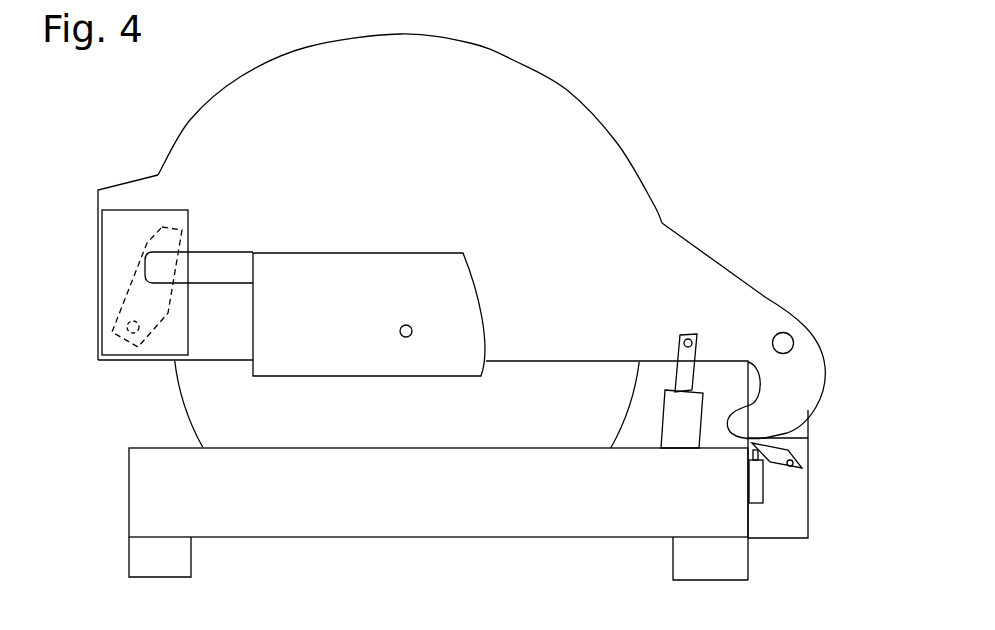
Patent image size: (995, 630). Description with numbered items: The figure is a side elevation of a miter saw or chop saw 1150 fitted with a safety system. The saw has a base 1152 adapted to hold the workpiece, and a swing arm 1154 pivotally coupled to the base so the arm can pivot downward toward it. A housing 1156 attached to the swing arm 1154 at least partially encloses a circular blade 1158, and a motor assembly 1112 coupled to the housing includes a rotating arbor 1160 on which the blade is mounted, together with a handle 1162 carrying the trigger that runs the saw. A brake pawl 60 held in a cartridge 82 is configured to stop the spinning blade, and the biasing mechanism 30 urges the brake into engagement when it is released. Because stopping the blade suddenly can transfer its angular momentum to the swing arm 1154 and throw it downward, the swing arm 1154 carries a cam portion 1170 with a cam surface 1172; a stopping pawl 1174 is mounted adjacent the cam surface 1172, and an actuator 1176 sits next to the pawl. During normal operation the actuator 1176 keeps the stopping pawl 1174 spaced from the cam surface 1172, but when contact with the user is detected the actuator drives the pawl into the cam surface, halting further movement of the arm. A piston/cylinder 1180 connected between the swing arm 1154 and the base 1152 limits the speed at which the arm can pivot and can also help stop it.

The biasing mechanism 30 is at (131, 168).
The brake pawl 60 is at (143, 287).
The cartridge 82 is at (150, 354).
The motor assembly 1112 is at (328, 377).
The miter saw 1150 is at (745, 156).
The base 1152 is at (153, 504).
The swing arm 1154 is at (730, 270).
The housing 1156 is at (567, 88).
The circular blade 1158 is at (180, 400).
The rotating arbor 1160 is at (407, 337).
The handle 1162 is at (197, 283).
The cam portion 1170 is at (810, 365).
The cam surface 1172 is at (785, 432).
The stopping pawl 1174 is at (798, 460).
The actuator 1176 is at (755, 490).
The piston/cylinder 1180 is at (673, 423).